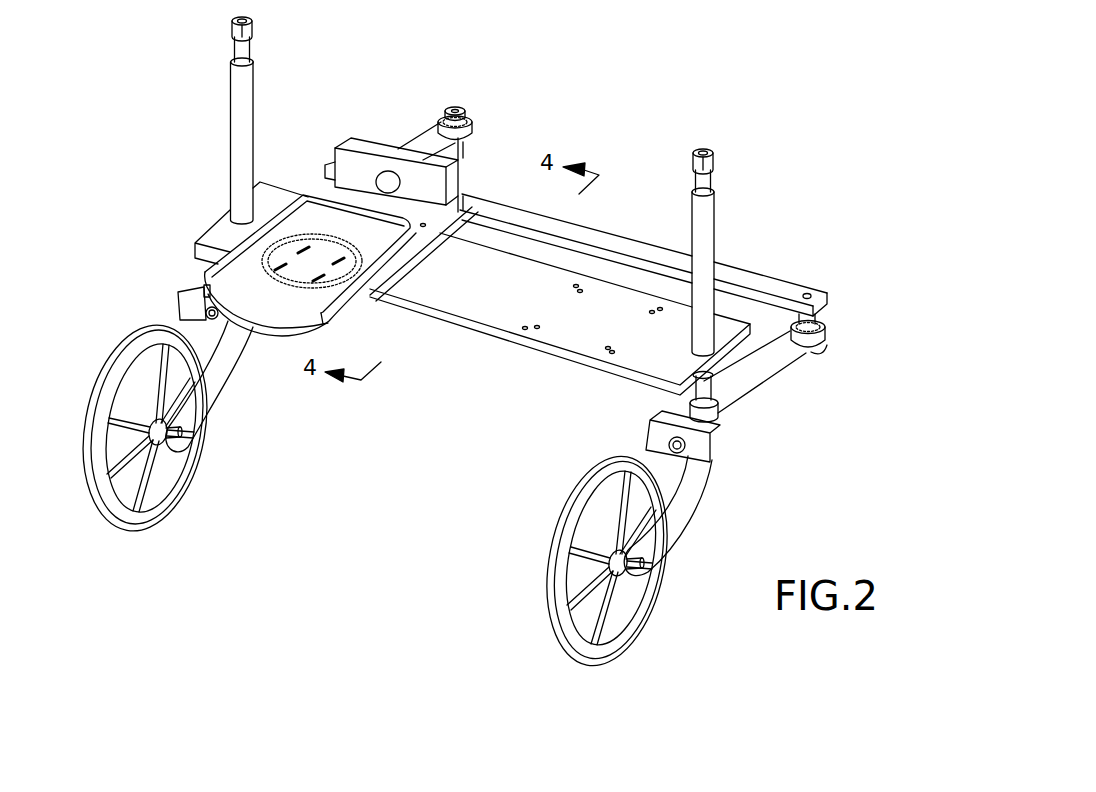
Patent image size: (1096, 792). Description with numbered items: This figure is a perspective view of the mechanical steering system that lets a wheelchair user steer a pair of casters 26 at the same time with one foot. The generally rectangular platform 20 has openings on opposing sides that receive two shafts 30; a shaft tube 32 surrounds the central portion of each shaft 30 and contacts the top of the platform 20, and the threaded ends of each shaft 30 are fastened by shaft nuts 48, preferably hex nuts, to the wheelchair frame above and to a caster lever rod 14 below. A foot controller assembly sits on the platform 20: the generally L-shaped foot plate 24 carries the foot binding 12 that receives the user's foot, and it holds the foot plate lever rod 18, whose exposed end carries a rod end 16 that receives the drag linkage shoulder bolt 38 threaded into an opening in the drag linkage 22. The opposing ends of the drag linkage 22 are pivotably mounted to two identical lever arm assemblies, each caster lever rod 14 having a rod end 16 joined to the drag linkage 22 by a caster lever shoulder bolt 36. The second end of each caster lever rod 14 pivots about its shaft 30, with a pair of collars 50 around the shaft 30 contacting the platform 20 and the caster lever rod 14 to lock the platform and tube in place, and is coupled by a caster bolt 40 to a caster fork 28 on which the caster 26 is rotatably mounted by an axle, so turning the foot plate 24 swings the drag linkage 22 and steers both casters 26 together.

The foot binding 12 is at (207, 273).
The caster lever rod 14 is at (765, 380).
The rod end 16 is at (470, 132).
The foot plate lever rod 18 is at (425, 140).
The platform 20 is at (540, 350).
The drag linkage 22 is at (595, 230).
The foot plate 24 is at (350, 147).
The caster 26 is at (108, 400).
The caster fork 28 is at (684, 488).
The shaft 30 is at (244, 50).
The shaft tube 32 is at (238, 108).
The caster lever shoulder bolt 36 is at (812, 288).
The drag linkage shoulder bolt 38 is at (455, 105).
The caster bolt 40 is at (655, 440).
The shaft nut 48 is at (233, 32).
The collar 50 is at (699, 375).